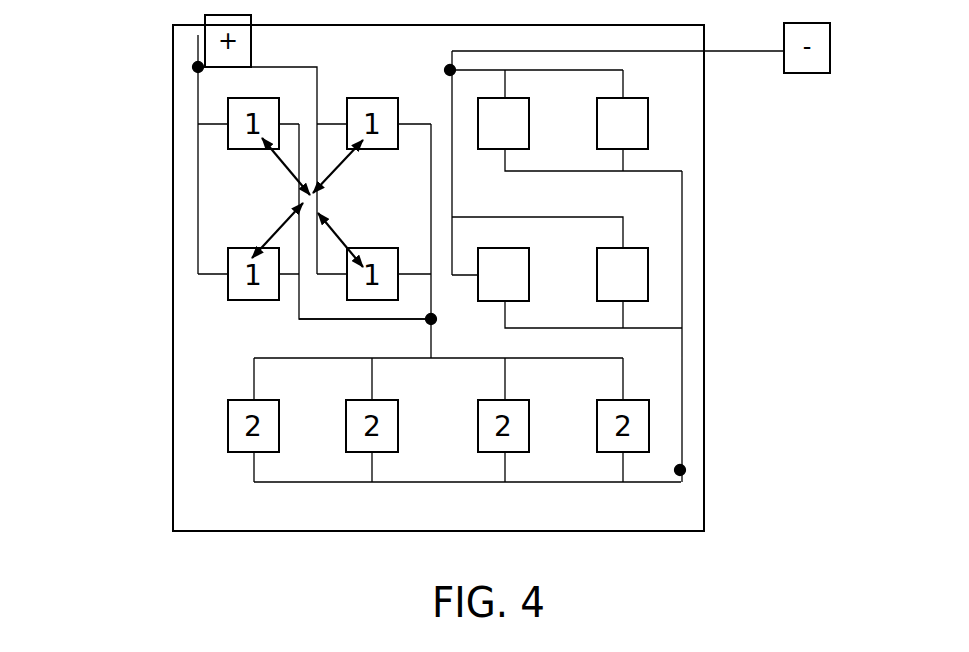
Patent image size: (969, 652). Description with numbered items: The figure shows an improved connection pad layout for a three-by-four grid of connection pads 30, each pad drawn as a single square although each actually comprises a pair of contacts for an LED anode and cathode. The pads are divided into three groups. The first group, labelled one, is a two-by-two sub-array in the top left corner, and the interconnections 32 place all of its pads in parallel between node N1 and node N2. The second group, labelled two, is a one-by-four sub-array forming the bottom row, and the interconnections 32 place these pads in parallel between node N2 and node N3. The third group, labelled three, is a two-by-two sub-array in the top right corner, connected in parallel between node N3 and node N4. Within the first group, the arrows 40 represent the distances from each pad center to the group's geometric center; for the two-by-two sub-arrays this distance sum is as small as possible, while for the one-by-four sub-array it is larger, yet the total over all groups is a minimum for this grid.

The node N1 is at (198, 67).
The node N2 is at (431, 319).
The node N3 is at (680, 470).
The node N4 is at (450, 70).
The connection pads 30 is at (648, 275).
The interconnections 32 is at (677, 281).
The arrows 40 is at (280, 157).